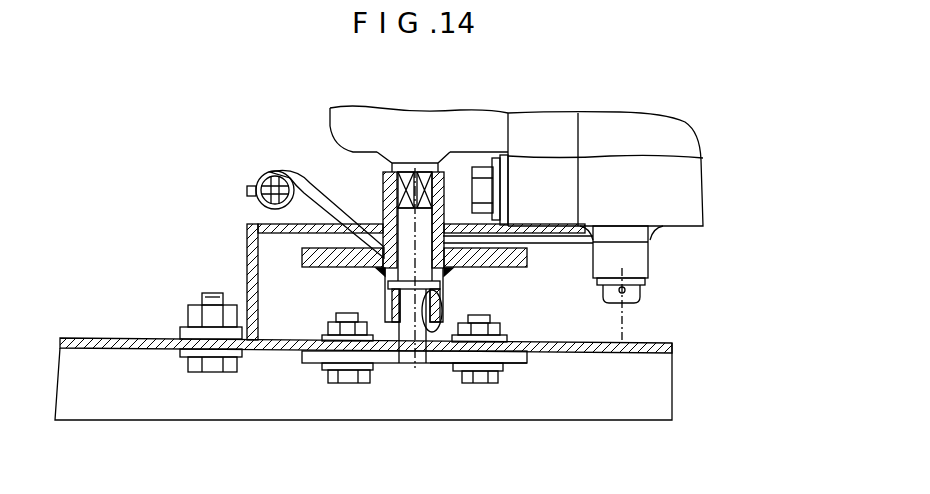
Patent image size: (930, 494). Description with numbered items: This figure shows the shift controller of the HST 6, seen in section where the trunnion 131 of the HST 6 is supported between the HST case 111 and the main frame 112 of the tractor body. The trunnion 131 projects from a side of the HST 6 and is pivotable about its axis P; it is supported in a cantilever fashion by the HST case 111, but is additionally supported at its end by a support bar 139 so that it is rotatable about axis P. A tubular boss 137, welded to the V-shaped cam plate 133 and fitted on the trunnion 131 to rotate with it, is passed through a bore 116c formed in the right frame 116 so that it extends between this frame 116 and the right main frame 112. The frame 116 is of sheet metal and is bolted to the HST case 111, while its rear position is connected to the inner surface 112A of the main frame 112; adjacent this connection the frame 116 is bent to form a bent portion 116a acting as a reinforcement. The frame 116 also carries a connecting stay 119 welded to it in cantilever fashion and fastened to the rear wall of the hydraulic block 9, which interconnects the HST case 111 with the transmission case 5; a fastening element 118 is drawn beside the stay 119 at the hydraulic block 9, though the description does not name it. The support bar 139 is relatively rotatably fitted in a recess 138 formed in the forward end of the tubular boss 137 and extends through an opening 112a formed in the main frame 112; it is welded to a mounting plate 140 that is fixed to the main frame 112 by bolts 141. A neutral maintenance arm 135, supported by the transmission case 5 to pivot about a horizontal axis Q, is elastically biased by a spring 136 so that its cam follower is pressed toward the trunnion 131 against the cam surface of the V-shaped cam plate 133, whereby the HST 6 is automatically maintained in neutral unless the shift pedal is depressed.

The transmission case 5 is at (686, 219).
The HST 6 is at (330, 124).
The HST case 111 is at (350, 128).
The hydraulic block 9 is at (703, 158).
The nut 118 is at (480, 188).
The connecting stay 119 is at (505, 194).
The trunnion 131 is at (397, 190).
The V-shaped cam plate 133 is at (516, 268).
The neutral maintenance arm 135 is at (270, 167).
The spring 136 is at (258, 204).
The tubular boss 137 is at (382, 286).
The recess 138 is at (443, 330).
The support bar 139 is at (405, 351).
The mounting plate 140 is at (437, 365).
The bolts 141 is at (342, 384).
The frame 116 is at (330, 282).
The bent portion 116a is at (247, 255).
The bore 116c is at (306, 238).
The main frame 112 is at (407, 352).
The inner surface 112A is at (103, 339).
The opening 112a is at (390, 351).
The axis P is at (413, 357).
The horizontal axis Q is at (622, 317).